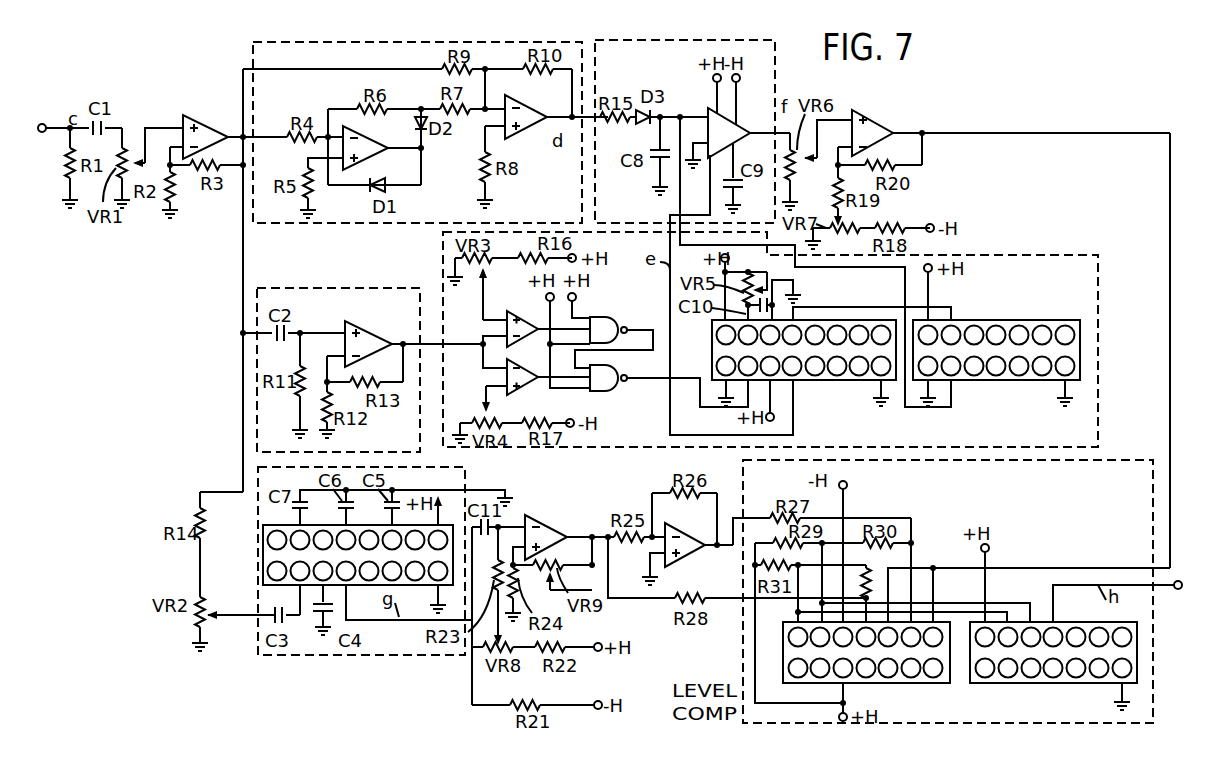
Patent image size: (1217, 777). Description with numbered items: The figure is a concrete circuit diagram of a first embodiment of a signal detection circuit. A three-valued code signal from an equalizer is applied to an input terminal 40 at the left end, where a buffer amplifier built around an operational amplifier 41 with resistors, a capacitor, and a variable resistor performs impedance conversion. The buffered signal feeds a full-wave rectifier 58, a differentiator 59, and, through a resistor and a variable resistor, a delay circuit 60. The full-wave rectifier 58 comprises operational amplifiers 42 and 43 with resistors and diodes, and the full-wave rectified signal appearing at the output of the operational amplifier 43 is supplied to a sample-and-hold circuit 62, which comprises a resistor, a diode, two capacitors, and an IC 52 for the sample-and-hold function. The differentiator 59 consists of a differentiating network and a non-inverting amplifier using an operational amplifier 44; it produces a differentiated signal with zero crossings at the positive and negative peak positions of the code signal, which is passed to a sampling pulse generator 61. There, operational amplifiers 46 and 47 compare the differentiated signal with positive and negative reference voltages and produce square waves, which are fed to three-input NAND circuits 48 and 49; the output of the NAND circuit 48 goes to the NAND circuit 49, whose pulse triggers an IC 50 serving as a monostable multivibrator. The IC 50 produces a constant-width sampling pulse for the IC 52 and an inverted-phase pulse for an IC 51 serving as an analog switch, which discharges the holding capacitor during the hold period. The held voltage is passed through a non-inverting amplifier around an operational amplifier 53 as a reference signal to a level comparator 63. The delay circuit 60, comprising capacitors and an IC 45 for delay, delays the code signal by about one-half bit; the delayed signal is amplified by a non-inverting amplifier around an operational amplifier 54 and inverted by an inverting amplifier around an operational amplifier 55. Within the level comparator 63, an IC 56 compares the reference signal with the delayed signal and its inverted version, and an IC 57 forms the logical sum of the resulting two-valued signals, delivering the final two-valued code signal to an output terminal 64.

The input terminal 40 is at (47, 122).
The operational amplifier 41 is at (207, 124).
The operational amplifier 42 is at (374, 141).
The operational amplifier 43 is at (536, 128).
The operational amplifier 44 is at (370, 333).
The IC for delay 45 is at (262, 551).
The operational amplifier 46 is at (517, 302).
The operational amplifier 47 is at (522, 388).
The 3-input NAND circuit 48 is at (608, 317).
The 3-input NAND circuit 49 is at (615, 392).
The IC for monostable multivibrator 50 is at (833, 382).
The IC for analog switch 51 is at (1003, 382).
The IC for S/H circuit 52 is at (746, 129).
The operational amplifier 53 is at (866, 117).
The operational amplifier 54 is at (555, 527).
The operational amplifier 55 is at (680, 532).
The IC 56 is at (908, 684).
The IC 57 is at (1033, 684).
The full-wave rectifier 58 is at (300, 40).
The differentiator 59 is at (300, 288).
The delay circuit 60 is at (283, 655).
The sampling pulse generator 61 is at (993, 253).
The sample-and-hold (S/H) circuit 62 is at (613, 39).
The level comparator 63 is at (1115, 458).
The output terminal 64 is at (1180, 590).